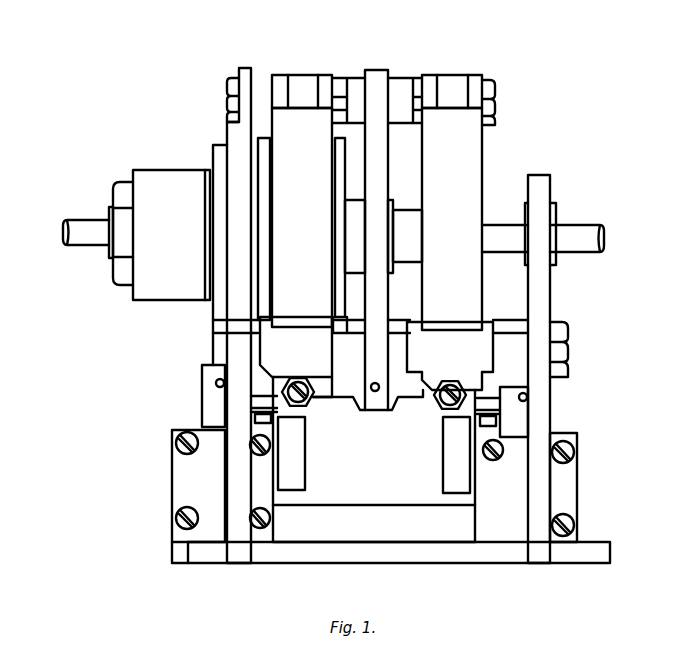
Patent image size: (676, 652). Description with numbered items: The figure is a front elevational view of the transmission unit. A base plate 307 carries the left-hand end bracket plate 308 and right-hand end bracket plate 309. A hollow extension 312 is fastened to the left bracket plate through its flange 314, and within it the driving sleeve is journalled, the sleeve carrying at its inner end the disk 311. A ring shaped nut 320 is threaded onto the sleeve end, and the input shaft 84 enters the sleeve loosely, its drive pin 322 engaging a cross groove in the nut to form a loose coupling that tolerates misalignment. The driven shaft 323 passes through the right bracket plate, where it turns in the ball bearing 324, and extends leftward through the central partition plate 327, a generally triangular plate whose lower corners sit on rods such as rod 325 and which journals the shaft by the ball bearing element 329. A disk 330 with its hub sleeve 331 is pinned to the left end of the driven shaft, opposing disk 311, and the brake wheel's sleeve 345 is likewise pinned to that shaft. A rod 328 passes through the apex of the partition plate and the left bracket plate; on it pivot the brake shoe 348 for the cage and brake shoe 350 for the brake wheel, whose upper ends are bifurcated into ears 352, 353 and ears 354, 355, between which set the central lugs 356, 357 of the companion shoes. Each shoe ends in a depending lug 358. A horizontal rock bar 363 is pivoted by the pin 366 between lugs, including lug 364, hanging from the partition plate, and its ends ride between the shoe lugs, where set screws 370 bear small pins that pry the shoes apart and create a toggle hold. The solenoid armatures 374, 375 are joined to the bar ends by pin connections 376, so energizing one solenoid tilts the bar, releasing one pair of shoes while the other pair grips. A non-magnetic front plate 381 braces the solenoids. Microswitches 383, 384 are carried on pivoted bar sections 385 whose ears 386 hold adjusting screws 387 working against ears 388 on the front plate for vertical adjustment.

The input shaft 84 is at (68, 238).
The base plate 307 is at (440, 563).
The left-hand end bracket plate 308 is at (175, 464).
The right-hand end bracket plate 309 is at (575, 482).
The disk 311 is at (265, 175).
The hollow extension 312 is at (171, 235).
The flange 314 is at (222, 160).
The ring shaped nut 320 is at (124, 282).
The drive pin 322 is at (109, 213).
The driven shaft 323 is at (578, 233).
The ball bearing 324 is at (553, 210).
The rod 325 is at (570, 352).
The central partition plate 327 is at (378, 88).
The rod 328 is at (497, 105).
The ball bearing element 329 is at (390, 205).
The disk 330 is at (340, 180).
The hub sleeve 331 is at (348, 218).
The sleeve 345 is at (405, 256).
The brake shoe 348 is at (302, 217).
The brake shoe 350 is at (452, 219).
The ear 352 is at (274, 78).
The ear 353 is at (323, 78).
The ear 354 is at (430, 83).
The ear 355 is at (478, 82).
The central lug 356 is at (300, 76).
The central lug 357 is at (452, 80).
The depending lug 358 is at (318, 377).
The rock bar 363 is at (350, 410).
The lug 364 is at (375, 392).
The pin 366 is at (346, 414).
The set screw 370 is at (293, 378).
The armature 374 is at (202, 396).
The armature 375 is at (523, 426).
The pin connection 376 is at (216, 383).
The front plate 381 is at (374, 459).
The microswitch 383 is at (305, 475).
The microswitch 384 is at (443, 480).
The bar section 385 is at (232, 466).
The ear 386 is at (256, 420).
The adjusting screw 387 is at (253, 411).
The ear 388 is at (582, 461).